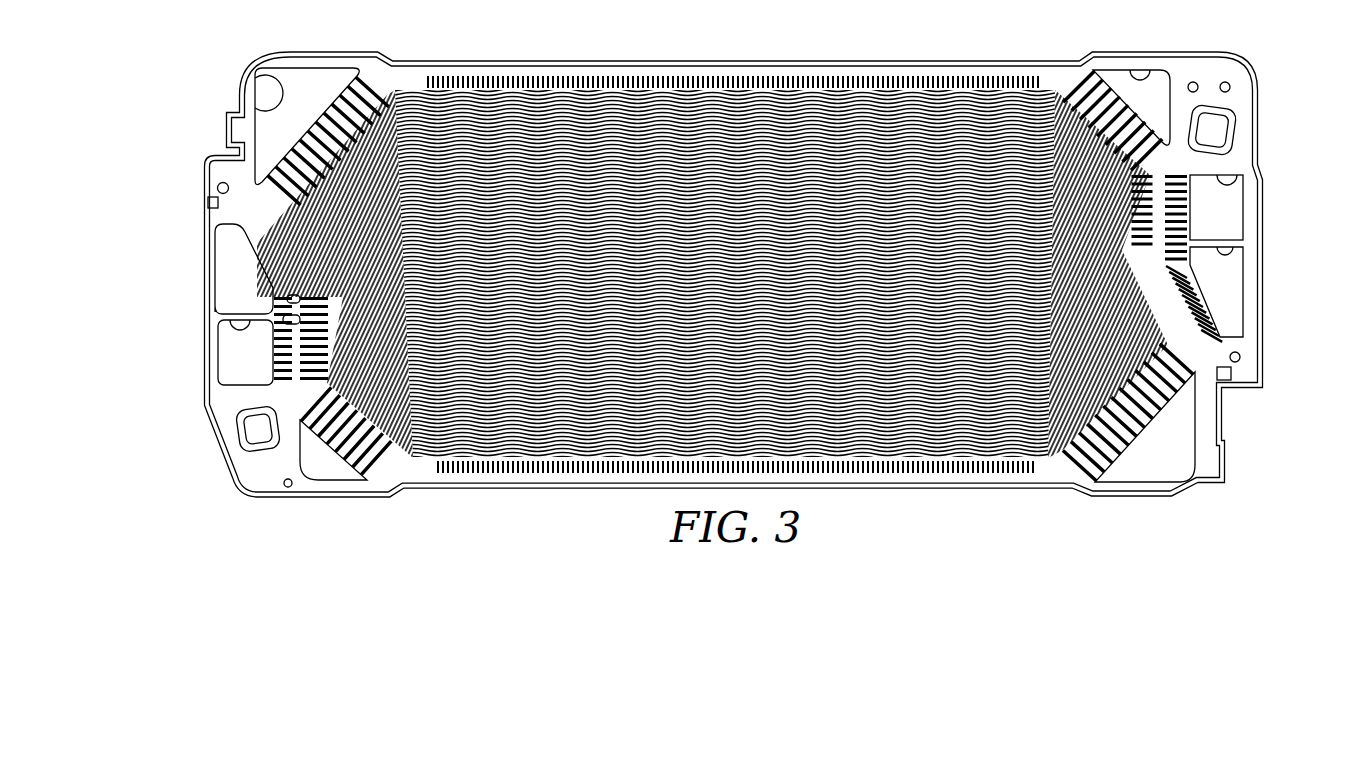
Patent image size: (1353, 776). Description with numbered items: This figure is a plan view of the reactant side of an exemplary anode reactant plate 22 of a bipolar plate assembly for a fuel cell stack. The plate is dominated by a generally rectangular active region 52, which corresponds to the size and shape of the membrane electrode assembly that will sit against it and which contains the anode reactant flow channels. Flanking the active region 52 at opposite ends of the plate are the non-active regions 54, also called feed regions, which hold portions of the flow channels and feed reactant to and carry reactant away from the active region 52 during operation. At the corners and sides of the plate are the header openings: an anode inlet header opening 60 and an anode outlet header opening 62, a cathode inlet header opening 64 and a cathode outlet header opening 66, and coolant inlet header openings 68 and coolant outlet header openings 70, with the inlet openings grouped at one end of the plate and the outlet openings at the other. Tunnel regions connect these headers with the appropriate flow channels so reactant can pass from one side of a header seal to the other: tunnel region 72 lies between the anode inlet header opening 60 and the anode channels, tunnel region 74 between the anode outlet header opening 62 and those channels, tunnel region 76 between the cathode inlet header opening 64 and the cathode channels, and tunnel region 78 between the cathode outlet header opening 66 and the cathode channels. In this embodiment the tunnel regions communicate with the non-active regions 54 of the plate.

The anode reactant plate 22 is at (763, 56).
The active region 52 is at (784, 434).
The non-active regions 54 is at (346, 222).
The anode inlet header opening 60 is at (1141, 72).
The anode outlet header opening 62 is at (352, 440).
The cathode inlet header opening 64 is at (250, 112).
The cathode outlet header opening 66 is at (1196, 430).
The coolant inlet header openings 68 is at (254, 263).
The coolant outlet header openings 70 is at (1240, 247).
The tunnel region 72 is at (1073, 80).
The tunnel region 74 is at (384, 464).
The tunnel region 76 is at (397, 80).
The tunnel region 78 is at (1070, 470).